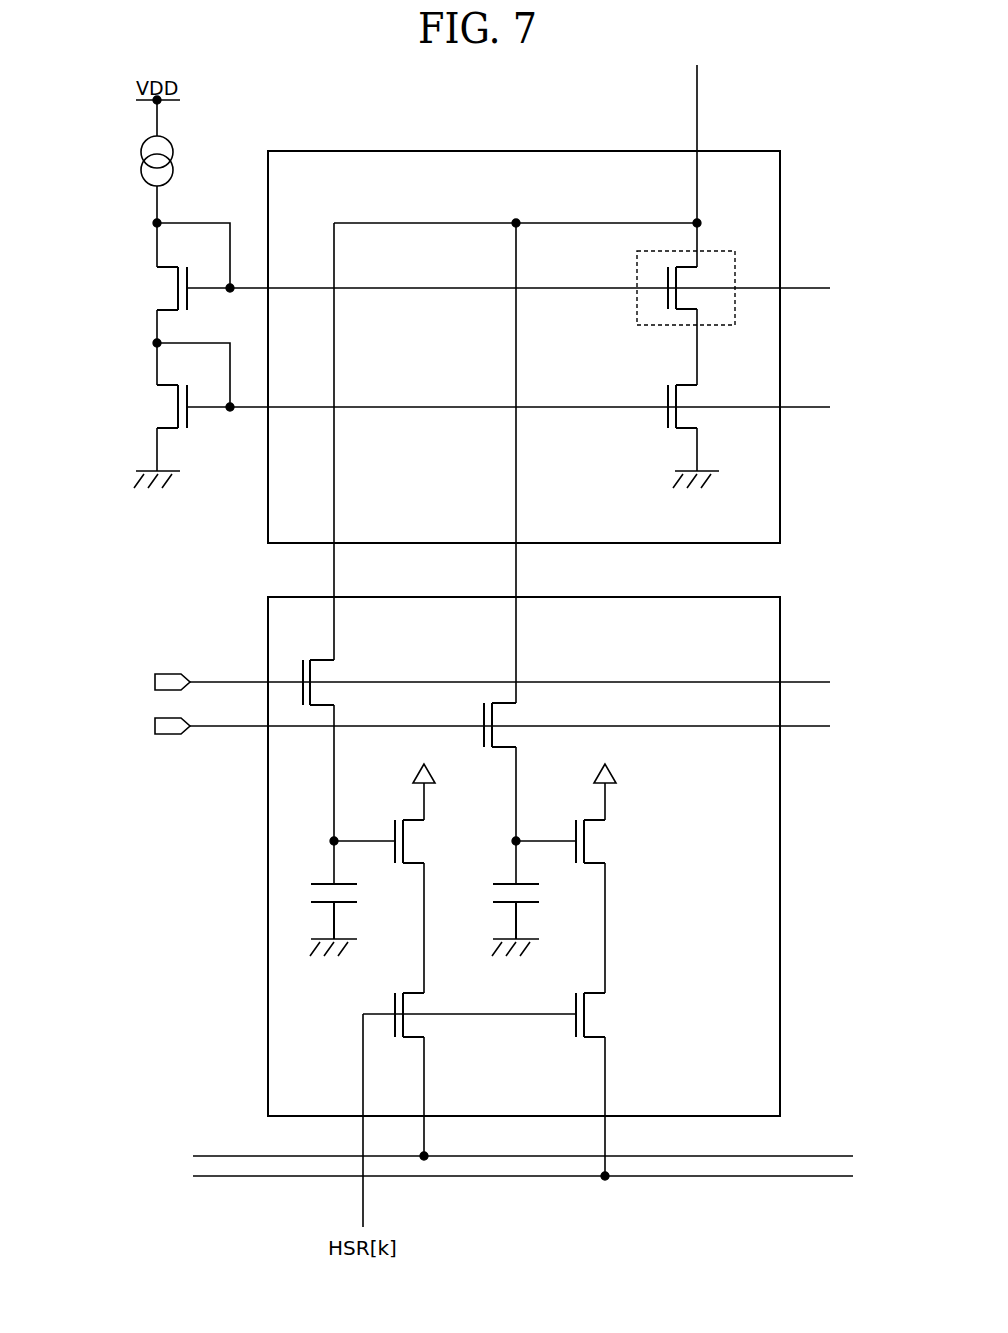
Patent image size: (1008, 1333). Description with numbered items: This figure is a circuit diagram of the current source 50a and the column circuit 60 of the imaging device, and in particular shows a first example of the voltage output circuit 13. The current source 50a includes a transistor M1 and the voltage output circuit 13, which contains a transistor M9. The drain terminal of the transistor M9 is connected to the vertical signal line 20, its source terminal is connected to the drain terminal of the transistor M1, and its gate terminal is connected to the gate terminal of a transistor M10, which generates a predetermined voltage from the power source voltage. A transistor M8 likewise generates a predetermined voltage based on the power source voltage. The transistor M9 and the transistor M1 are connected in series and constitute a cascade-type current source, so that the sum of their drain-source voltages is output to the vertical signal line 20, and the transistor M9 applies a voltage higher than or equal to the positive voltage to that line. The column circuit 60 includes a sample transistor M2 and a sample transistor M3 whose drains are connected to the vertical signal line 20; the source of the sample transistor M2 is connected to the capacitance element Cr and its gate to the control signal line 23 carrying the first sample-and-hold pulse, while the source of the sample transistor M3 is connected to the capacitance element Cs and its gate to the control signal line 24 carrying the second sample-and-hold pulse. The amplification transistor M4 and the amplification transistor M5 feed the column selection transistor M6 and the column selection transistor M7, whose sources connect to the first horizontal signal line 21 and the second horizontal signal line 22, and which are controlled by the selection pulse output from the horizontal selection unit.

The vertical signal line 20 is at (697, 113).
The current source 50a is at (735, 151).
The voltage output circuit 13 is at (735, 258).
The transistor M9 is at (676, 281).
The transistor M1 is at (676, 396).
The transistor M10 is at (178, 279).
The transistor M8 is at (178, 397).
The column circuit 60 is at (780, 630).
The control signal line 23 is at (223, 680).
The control signal line 24 is at (223, 730).
The sample transistor M2 is at (310, 672).
The sample transistor M3 is at (492, 717).
The amplification transistor M4 is at (403, 821).
The amplification transistor M5 is at (584, 821).
The column selection transistor M6 is at (403, 993).
The column selection transistor M7 is at (584, 993).
The capacitance element Cr is at (323, 884).
The capacitance element Cs is at (505, 884).
The first horizontal signal line 21 is at (820, 1155).
The second horizontal signal line 22 is at (820, 1178).